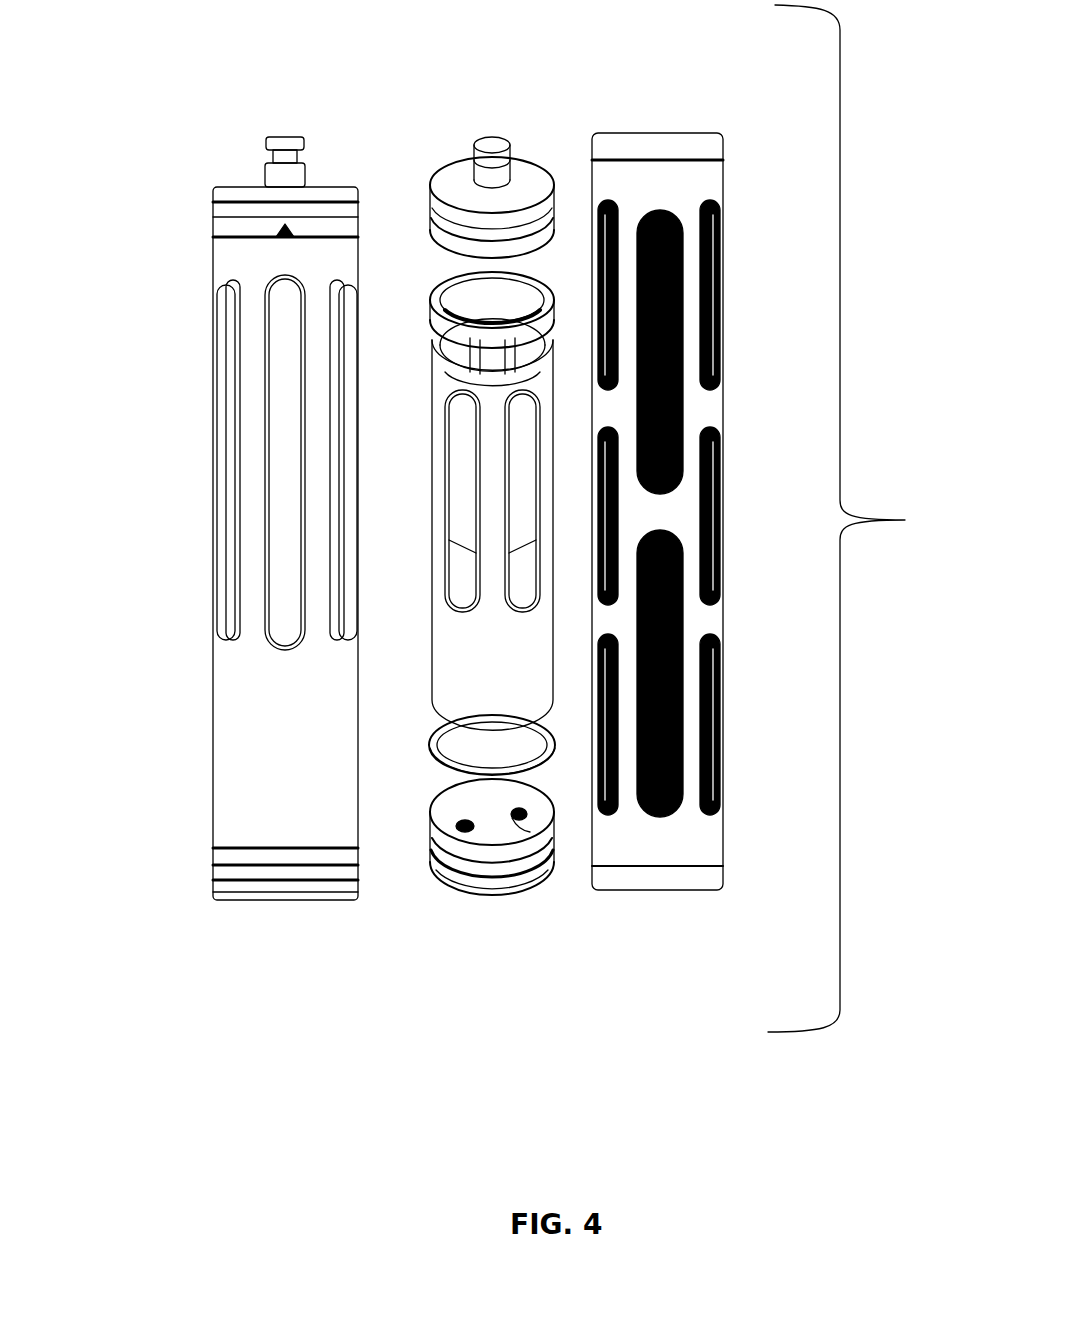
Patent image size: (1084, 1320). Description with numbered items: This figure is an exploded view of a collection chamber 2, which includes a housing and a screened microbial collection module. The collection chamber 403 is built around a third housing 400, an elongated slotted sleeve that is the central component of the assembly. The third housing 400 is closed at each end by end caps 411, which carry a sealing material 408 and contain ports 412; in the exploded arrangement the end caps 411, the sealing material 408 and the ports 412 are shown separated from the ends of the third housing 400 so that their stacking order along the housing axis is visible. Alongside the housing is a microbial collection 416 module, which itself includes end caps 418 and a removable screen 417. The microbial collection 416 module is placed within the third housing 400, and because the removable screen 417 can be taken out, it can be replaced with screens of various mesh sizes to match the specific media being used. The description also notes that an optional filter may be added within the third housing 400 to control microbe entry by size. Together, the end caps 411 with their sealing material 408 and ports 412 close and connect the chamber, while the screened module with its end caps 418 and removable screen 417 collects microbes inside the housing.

The collection chamber 2 is at (850, 518).
The third housing 400 is at (447, 332).
The collection chamber 403 is at (237, 748).
The sealing material 408 is at (215, 892).
The end caps 411 is at (512, 150).
The ports 412 is at (540, 872).
The microbial collection module 416 is at (663, 183).
The removable screen 417 is at (717, 790).
The end caps 418 is at (620, 142).